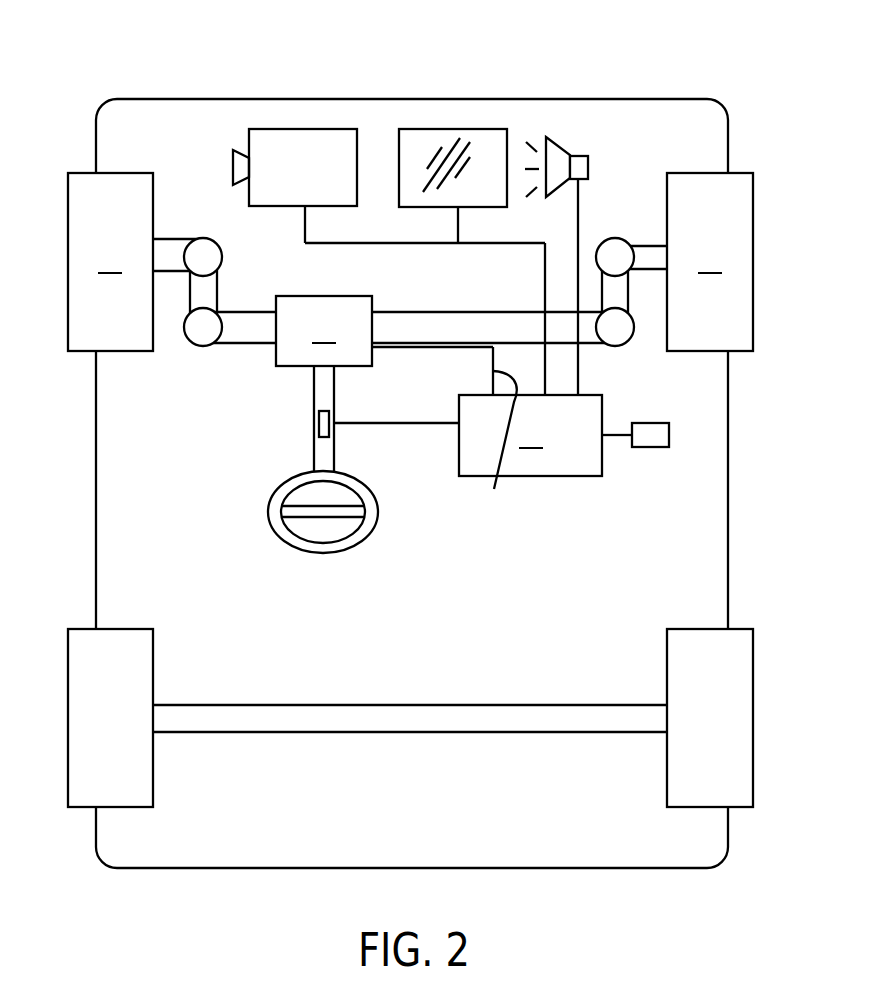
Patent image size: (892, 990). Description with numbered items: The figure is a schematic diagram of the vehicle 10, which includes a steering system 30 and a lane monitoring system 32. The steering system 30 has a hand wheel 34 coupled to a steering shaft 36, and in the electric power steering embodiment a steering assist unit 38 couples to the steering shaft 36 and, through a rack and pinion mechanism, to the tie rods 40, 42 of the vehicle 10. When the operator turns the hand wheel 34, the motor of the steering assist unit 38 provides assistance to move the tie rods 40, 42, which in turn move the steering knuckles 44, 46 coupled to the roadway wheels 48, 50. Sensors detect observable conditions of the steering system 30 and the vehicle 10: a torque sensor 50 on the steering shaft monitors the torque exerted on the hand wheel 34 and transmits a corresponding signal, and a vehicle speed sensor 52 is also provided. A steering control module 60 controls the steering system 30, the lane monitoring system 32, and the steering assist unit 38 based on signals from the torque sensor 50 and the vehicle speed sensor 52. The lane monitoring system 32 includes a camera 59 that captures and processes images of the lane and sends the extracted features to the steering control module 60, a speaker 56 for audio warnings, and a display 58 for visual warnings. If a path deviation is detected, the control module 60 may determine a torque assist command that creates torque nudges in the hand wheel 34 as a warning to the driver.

The vehicle 10 is at (647, 70).
The steering system 30 is at (236, 427).
The lane monitoring system 32 is at (430, 70).
The hand wheel 34 is at (378, 520).
The steering shaft 36 is at (313, 455).
The steering assist unit 38 is at (384, 345).
The tie rod 40 is at (420, 325).
The tie rod 42 is at (265, 340).
The steering knuckle 44 is at (652, 257).
The steering knuckle 46 is at (170, 248).
The roadway wheel 48 is at (710, 262).
The torque sensor 50 is at (318, 425).
The vehicle speed sensor 52 is at (669, 434).
The speaker 56 is at (563, 137).
The display 58 is at (455, 129).
The camera 59 is at (304, 129).
The steering control module 60 is at (453, 353).